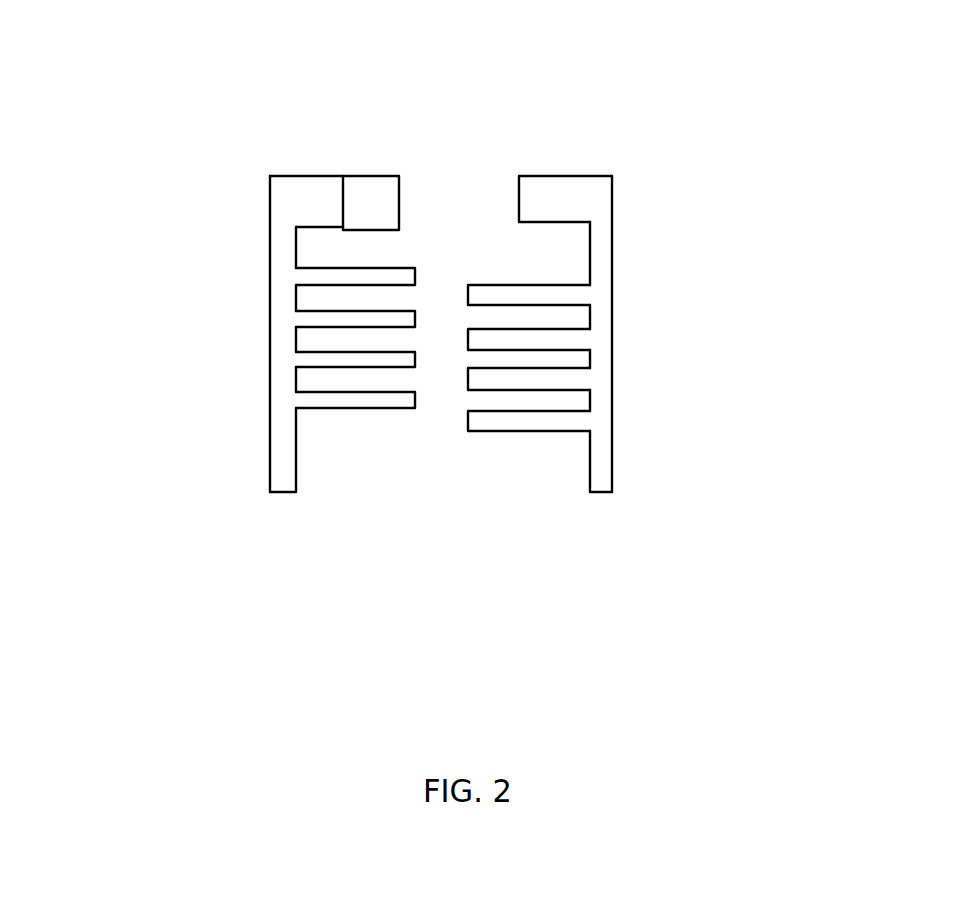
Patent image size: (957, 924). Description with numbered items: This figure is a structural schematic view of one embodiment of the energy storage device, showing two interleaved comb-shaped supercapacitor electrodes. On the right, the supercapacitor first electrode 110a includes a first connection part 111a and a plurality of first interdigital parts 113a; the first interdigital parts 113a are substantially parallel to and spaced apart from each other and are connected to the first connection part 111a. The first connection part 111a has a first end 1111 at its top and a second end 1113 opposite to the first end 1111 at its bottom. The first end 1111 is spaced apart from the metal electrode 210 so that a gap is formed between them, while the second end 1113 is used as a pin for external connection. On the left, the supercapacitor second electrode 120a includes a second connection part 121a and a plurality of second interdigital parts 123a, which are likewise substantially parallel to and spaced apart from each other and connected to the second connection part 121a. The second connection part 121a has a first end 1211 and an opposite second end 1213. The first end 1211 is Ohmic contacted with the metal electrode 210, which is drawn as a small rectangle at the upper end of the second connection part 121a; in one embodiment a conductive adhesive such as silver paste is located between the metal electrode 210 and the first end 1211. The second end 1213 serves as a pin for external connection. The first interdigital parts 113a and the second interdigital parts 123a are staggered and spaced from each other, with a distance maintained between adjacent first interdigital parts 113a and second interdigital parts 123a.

The supercapacitor second electrode 120a is at (180, 105).
The second connection part 121a is at (283, 219).
The first end 1211 is at (332, 198).
The metal electrode 210 is at (378, 202).
The second interdigital parts 123a is at (345, 318).
The second end 1213 is at (283, 478).
The supercapacitor first electrode 110a is at (738, 112).
The first connection part 111a is at (600, 258).
The first end 1111 is at (537, 198).
The first interdigital parts 113a is at (547, 338).
The second end 1113 is at (603, 481).